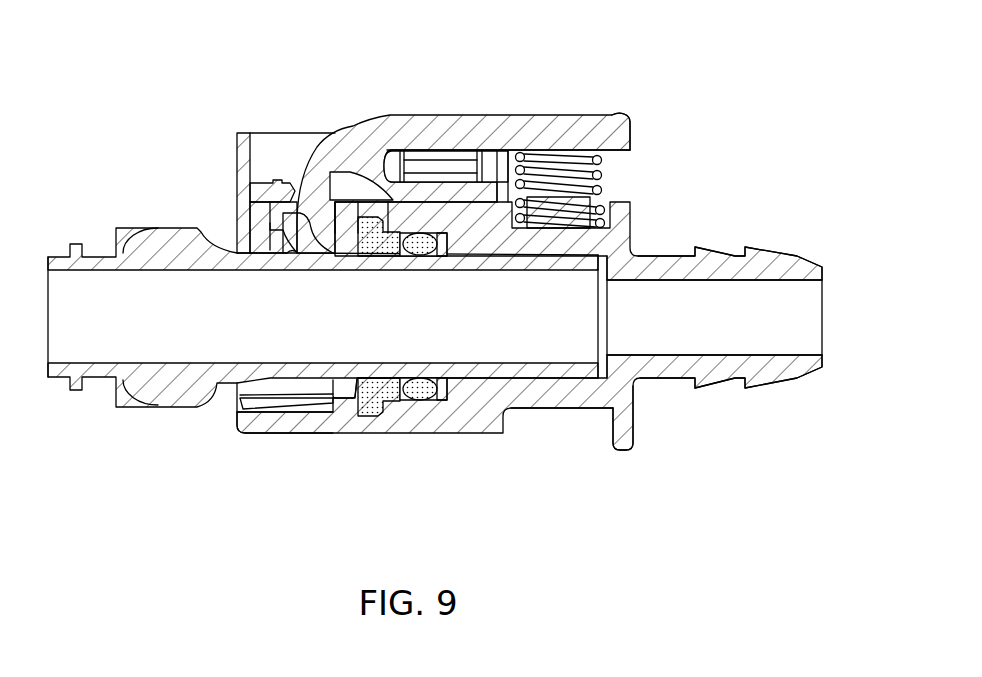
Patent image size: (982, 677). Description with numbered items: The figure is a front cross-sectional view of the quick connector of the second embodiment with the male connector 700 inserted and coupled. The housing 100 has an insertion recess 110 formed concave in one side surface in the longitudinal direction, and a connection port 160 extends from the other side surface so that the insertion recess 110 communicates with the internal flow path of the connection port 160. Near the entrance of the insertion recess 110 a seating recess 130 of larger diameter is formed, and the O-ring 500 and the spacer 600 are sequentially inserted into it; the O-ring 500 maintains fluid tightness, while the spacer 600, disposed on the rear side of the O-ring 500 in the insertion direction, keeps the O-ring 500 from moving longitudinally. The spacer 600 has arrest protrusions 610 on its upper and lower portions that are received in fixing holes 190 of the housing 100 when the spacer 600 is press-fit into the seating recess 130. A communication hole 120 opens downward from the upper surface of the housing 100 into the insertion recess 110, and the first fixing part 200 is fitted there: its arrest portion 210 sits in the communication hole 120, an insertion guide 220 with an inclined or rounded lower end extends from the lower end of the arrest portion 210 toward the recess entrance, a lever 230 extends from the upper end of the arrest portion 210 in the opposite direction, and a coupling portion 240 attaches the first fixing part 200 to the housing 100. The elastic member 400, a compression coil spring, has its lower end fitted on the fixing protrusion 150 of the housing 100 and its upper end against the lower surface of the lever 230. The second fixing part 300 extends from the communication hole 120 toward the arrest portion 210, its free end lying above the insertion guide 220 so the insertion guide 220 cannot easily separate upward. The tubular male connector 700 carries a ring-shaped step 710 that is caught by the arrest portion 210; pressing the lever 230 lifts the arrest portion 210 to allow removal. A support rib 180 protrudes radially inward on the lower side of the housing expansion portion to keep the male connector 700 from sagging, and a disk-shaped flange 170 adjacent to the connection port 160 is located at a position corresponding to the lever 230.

The housing 100 is at (500, 243).
The insertion recess 110 is at (577, 393).
The communication hole 120 is at (237, 143).
The seating recess 130 is at (408, 401).
The fixing protrusion 150 is at (575, 206).
The connection port 160 is at (763, 267).
The flange 170 is at (620, 433).
The support rib 180 is at (240, 430).
The fixing hole 190 is at (382, 400).
The first fixing part 200 is at (358, 172).
The arrest portion 210 is at (302, 180).
The insertion guide 220 is at (300, 228).
The lever 230 is at (602, 125).
The coupling portion 240 is at (438, 177).
The second fixing part 300 is at (290, 213).
The elastic member 400 is at (600, 175).
The O-ring 500 is at (423, 400).
The spacer 600 is at (390, 403).
The arrest protrusions 610 is at (328, 403).
The male connector 700 is at (173, 407).
The step 710 is at (298, 409).